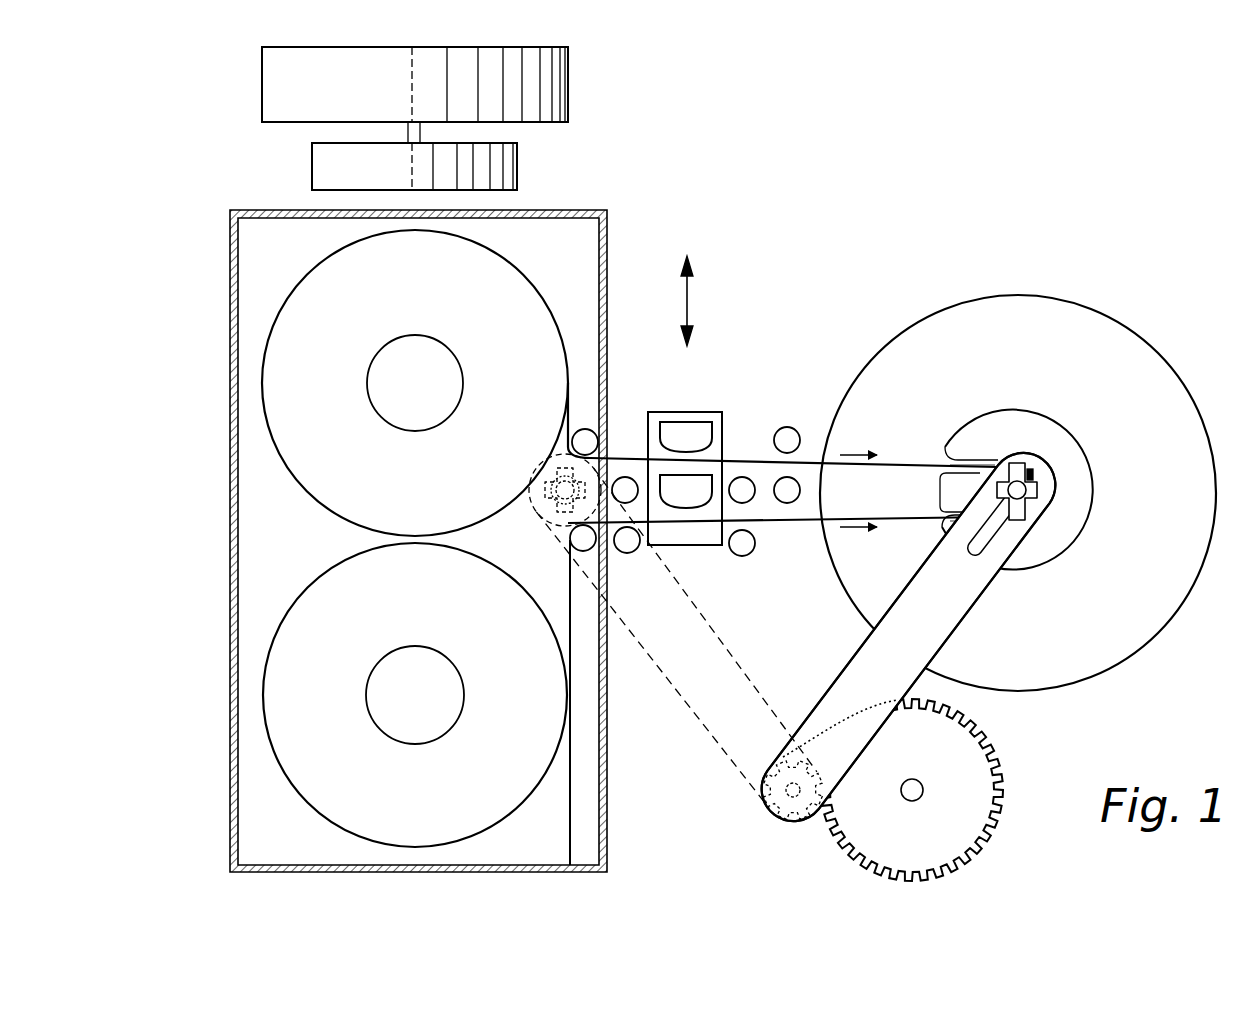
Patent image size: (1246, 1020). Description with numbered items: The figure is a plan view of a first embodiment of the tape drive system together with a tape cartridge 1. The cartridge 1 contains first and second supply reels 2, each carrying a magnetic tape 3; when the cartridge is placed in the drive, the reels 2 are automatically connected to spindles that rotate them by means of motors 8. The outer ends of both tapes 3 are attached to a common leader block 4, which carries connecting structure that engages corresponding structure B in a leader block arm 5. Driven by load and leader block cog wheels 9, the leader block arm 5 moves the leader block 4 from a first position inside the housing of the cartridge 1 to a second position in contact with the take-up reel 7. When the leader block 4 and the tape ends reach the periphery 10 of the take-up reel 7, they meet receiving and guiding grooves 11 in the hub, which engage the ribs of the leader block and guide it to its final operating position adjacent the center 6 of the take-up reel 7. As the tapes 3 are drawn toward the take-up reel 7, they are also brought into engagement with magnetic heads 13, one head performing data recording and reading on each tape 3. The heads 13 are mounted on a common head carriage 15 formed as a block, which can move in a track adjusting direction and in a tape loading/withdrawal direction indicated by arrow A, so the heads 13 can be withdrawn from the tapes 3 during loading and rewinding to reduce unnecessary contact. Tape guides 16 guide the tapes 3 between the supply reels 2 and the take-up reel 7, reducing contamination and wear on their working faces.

The cartridge 1 is at (256, 817).
The supply reels 2 is at (355, 610).
The magnetic tape 3 is at (907, 490).
The leader block 4 is at (1020, 512).
The leader block arm 5 is at (933, 632).
The center of the take-up reel 6 is at (1026, 490).
The take-up reel 7 is at (1055, 328).
The motors 8 is at (500, 163).
The load and leader block cog wheels 9 is at (857, 828).
The periphery of the take-up reel 10 is at (1058, 448).
The grooves 11 is at (965, 463).
The magnetic heads 13 is at (697, 490).
The head carriage 15 is at (700, 535).
The tape guides 16 is at (742, 556).
The arrow A / connecting structure A is at (677, 301).
The corresponding structure B is at (535, 487).